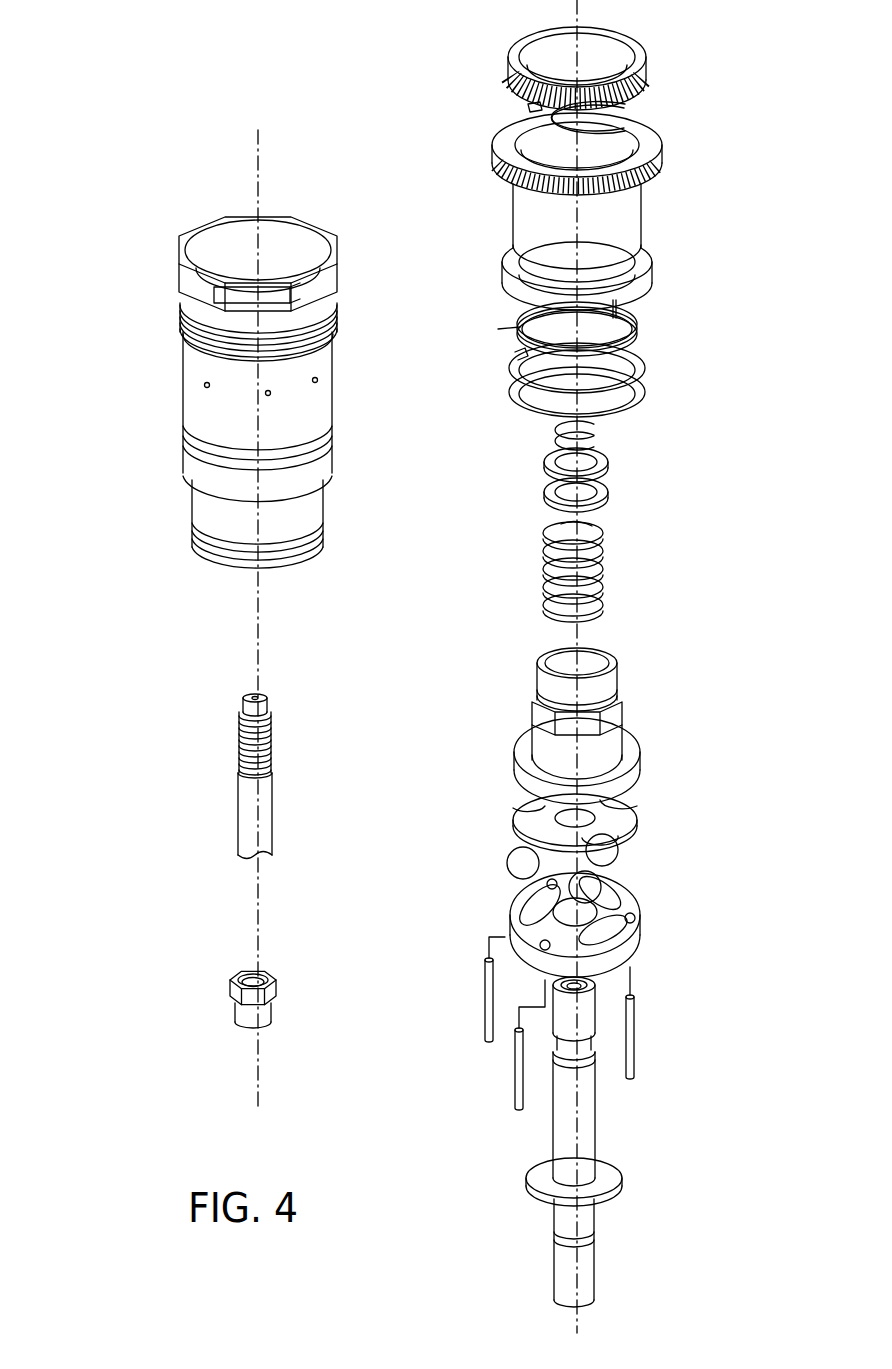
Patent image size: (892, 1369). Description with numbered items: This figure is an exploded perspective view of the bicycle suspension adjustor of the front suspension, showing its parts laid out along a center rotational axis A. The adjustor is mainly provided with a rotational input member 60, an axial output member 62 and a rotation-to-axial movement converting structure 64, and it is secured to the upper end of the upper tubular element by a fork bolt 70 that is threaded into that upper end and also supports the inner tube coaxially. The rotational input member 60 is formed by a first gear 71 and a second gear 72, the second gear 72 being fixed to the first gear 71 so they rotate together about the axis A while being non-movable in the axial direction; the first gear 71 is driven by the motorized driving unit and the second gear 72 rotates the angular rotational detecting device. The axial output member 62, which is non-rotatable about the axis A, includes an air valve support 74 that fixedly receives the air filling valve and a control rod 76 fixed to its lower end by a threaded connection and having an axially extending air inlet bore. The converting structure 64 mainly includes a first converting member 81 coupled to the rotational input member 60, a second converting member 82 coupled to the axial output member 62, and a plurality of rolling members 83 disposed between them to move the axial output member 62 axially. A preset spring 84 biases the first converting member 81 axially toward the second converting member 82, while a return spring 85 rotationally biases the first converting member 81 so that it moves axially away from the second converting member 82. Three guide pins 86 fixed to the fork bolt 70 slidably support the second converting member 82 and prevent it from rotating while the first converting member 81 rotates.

The center rotational axis A is at (580, 16).
The rotational input member 60 is at (738, 60).
The axial output member 62 is at (613, 1109).
The rotation-to-axial movement converting structure 64 is at (713, 223).
The fork bolt 70 is at (183, 372).
The first gear 71 is at (658, 126).
The second gear 72 is at (647, 68).
The air valve support 74 is at (596, 1132).
The control rod 76 is at (274, 812).
The first converting member 81 is at (641, 756).
The second converting member 82 is at (638, 908).
The rolling members 83 is at (508, 870).
The preset spring 84 is at (603, 553).
The return spring 85 is at (637, 320).
The guide pins 86 is at (485, 1017).